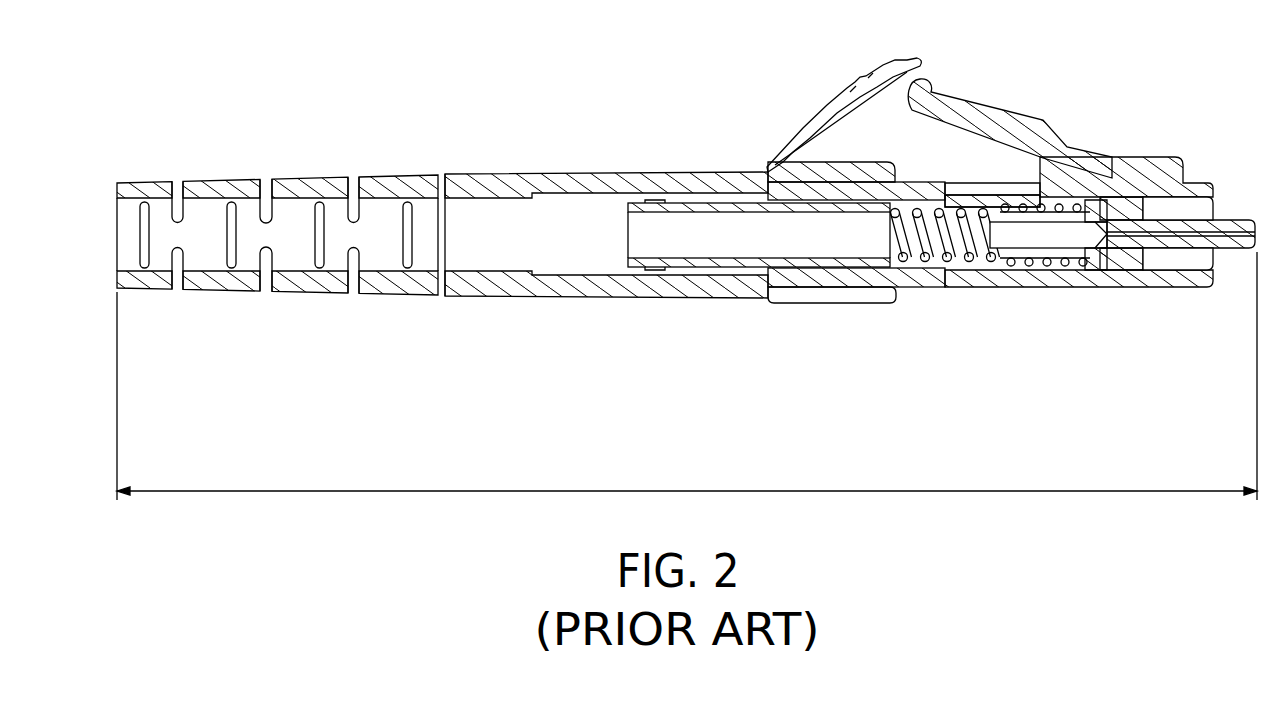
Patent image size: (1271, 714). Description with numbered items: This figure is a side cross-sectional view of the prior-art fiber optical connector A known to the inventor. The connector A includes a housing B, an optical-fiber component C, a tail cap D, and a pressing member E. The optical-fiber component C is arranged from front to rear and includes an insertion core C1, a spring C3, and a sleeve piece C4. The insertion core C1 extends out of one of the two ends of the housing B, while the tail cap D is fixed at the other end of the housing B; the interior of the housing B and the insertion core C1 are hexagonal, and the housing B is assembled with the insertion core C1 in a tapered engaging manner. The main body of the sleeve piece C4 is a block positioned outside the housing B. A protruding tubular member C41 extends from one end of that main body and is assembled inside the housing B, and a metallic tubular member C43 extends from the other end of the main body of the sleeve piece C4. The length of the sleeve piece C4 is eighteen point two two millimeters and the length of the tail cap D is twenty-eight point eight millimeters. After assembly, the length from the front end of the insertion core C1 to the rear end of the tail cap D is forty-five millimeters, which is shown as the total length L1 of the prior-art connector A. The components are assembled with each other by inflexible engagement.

The prior-art fiber optical connector A is at (426, 108).
The housing B is at (1155, 160).
The optical-fiber component C is at (1205, 373).
The tail cap D is at (318, 290).
The pressing member E is at (792, 148).
The insertion core C1 is at (1193, 242).
The spring C3 is at (1068, 270).
The sleeve piece C4 is at (835, 283).
The protruding tubular member C41 is at (996, 270).
The metallic tubular member C43 is at (700, 268).
The total length L1 is at (687, 376).